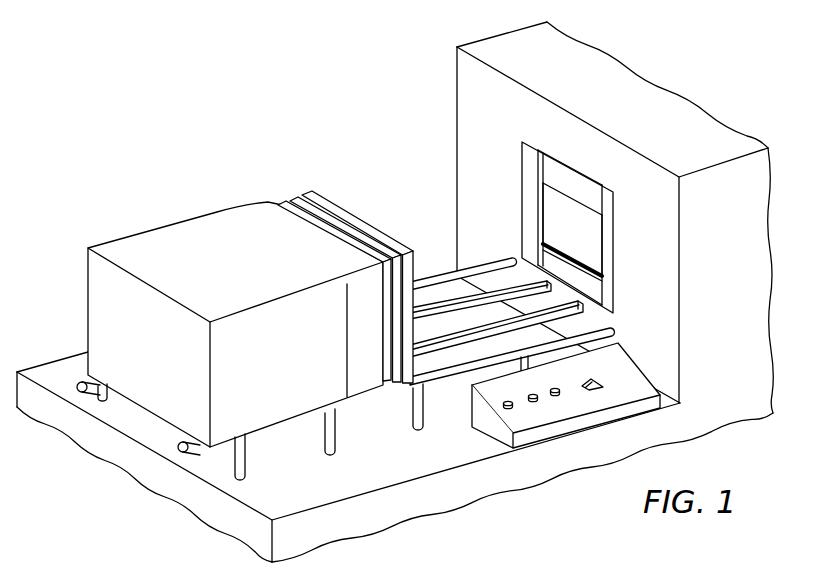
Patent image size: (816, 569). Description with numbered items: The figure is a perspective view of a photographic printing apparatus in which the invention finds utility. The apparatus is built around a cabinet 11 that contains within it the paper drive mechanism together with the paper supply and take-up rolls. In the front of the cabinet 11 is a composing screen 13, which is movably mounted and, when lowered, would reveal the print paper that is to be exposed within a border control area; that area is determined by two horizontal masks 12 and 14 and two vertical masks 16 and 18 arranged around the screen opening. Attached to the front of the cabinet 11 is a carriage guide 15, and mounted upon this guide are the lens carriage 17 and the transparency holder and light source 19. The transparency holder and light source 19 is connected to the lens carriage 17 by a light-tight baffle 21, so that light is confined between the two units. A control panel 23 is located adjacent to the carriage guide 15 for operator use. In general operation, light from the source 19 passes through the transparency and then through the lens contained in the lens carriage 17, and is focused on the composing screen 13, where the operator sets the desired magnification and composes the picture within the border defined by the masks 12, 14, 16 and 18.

The cabinet 11 is at (447, 79).
The horizontal mask 12 is at (582, 187).
The composing screen 13 is at (580, 236).
The horizontal mask 14 is at (592, 285).
The carriage guide 15 is at (53, 362).
The vertical mask 16 is at (533, 200).
The lens carriage 17 is at (325, 200).
The vertical mask 18 is at (607, 248).
The transparency holder and light source 19 is at (203, 213).
The light-tight baffle 21 is at (288, 203).
The control panel 23 is at (540, 416).